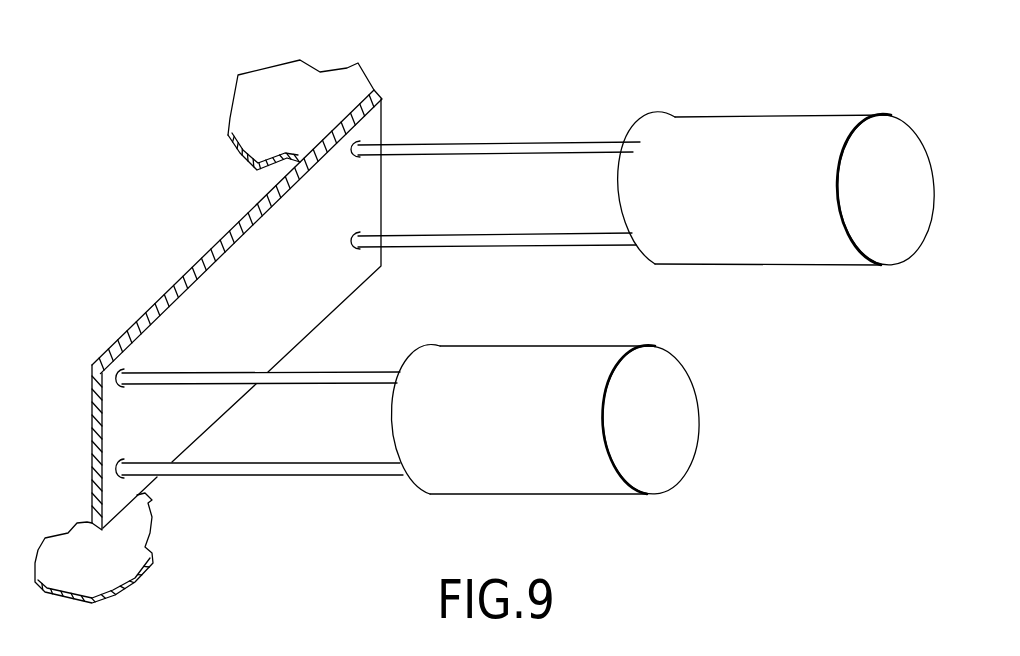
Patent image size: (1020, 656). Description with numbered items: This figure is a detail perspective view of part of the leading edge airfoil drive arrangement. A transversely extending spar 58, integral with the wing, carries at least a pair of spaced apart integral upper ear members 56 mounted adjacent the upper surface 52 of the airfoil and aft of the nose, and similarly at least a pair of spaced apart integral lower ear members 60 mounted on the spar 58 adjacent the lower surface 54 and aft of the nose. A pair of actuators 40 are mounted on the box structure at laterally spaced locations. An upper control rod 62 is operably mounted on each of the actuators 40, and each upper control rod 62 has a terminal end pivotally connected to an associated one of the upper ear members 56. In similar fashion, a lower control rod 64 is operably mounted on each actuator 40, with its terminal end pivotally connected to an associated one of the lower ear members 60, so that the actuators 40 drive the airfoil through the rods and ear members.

The actuator 40 is at (806, 116).
The upper surface 52 is at (347, 70).
The lower surface 54 is at (137, 566).
The upper ear member 56 is at (351, 160).
The spar 58 is at (251, 241).
The lower ear member 60 is at (118, 463).
The upper control rod 62 is at (461, 143).
The lower control rod 64 is at (275, 478).